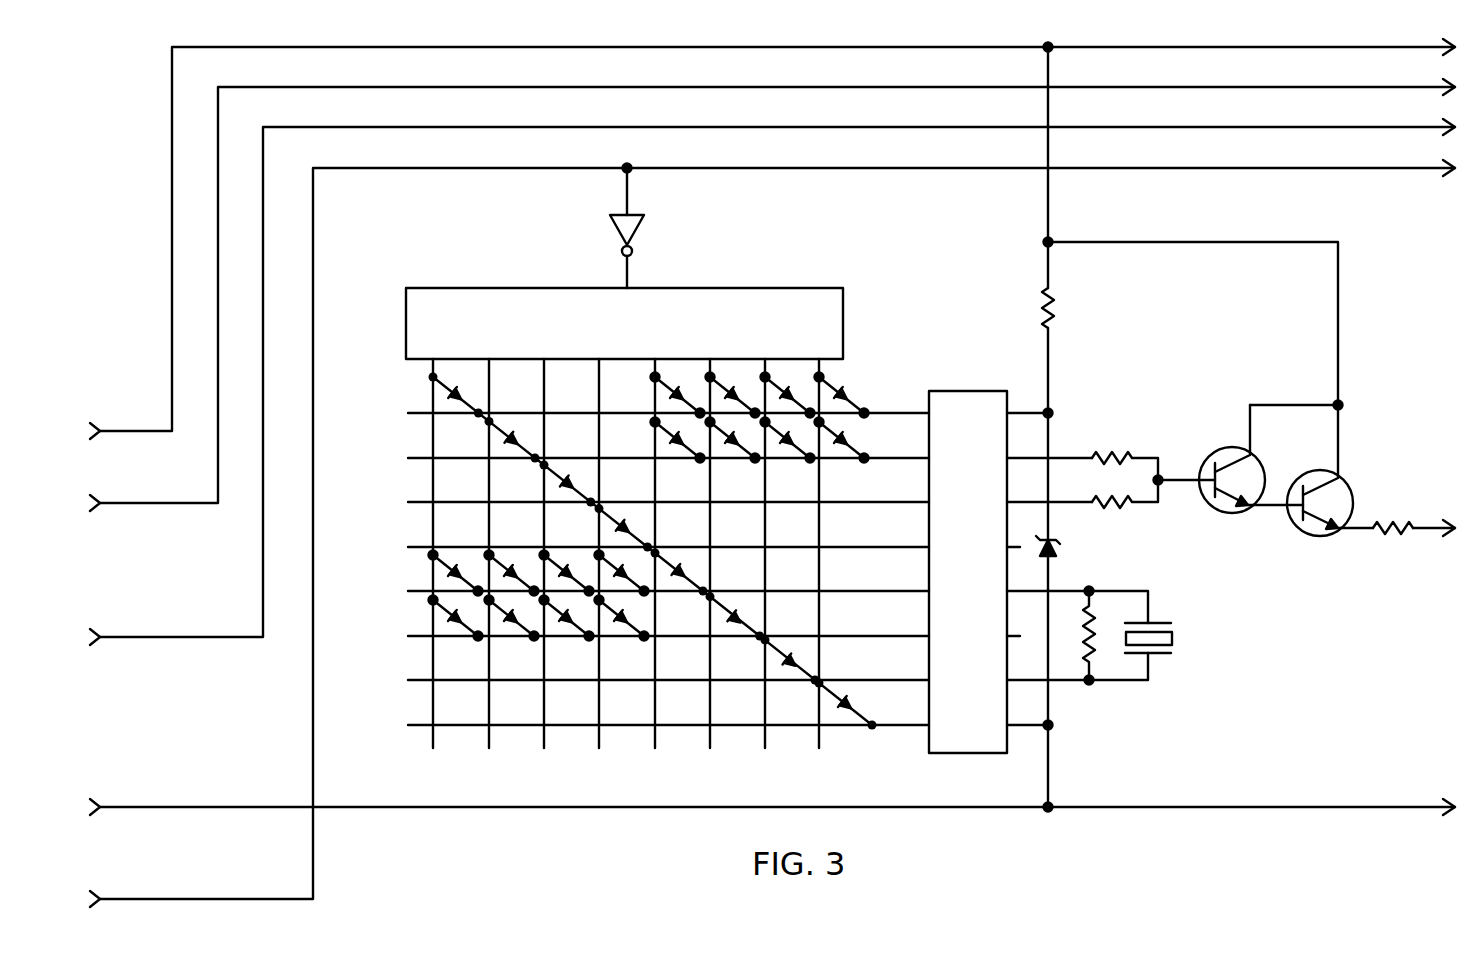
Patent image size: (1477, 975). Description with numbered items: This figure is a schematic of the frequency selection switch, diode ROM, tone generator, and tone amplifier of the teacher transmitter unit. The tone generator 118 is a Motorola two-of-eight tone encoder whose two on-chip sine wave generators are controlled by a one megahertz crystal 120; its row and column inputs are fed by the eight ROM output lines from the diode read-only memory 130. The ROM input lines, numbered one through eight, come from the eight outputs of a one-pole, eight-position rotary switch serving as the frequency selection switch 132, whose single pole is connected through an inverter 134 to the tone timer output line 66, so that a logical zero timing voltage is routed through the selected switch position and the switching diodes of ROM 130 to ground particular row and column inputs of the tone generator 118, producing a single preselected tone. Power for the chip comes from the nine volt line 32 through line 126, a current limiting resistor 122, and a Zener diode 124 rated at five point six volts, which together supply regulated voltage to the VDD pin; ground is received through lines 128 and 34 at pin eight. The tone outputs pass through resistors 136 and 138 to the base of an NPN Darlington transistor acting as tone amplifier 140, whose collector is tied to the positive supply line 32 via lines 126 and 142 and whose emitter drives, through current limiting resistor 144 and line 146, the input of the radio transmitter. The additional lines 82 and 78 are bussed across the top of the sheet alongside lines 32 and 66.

The 9 V line 32 is at (116, 431).
The signal line 82 is at (128, 503).
The signal line 78 is at (128, 637).
The tone timer output line 66 is at (128, 899).
The ground line 34 is at (128, 807).
The tone generator 118 is at (964, 391).
The crystal 120 is at (1160, 655).
The current limiting resistor 122 is at (1041, 306).
The Zener diode 124 is at (1052, 556).
The line 126 is at (1046, 219).
The line 128 is at (1050, 750).
The diode read-only memory (ROM) 130 is at (402, 757).
The frequency selection switch 132 is at (497, 287).
The inverter 134 is at (645, 228).
The resistor 136 is at (1116, 455).
The resistor 138 is at (1106, 514).
The tone amplifier 140 is at (1256, 542).
The line 142 is at (1235, 243).
The current limiting resistor 144 is at (1408, 534).
The line 146 is at (1426, 525).